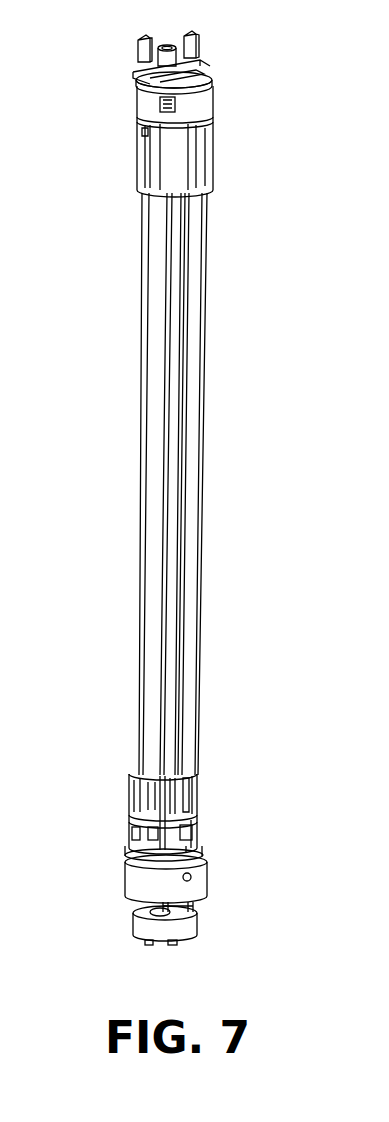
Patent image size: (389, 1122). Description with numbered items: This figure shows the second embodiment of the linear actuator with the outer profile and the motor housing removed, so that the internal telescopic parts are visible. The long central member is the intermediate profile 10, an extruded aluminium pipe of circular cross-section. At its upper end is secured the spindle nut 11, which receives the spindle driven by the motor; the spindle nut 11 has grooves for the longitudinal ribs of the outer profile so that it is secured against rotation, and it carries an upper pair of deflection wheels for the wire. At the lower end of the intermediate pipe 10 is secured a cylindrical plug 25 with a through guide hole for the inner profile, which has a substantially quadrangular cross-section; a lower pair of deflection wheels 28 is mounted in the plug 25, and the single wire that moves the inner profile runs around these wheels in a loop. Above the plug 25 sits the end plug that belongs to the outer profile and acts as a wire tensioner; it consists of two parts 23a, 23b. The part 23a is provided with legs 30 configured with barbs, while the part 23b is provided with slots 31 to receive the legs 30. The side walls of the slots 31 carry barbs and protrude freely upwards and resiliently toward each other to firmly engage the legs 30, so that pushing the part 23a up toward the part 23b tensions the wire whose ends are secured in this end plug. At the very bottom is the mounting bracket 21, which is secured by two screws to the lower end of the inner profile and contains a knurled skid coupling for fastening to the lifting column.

The intermediate profile 10 is at (152, 428).
The spindle nut 11 is at (199, 158).
The mounting bracket 21 is at (197, 930).
The end plug part with legs 23a is at (132, 828).
The end plug part with slots 23b is at (132, 790).
The cylindrical plug 25 is at (130, 880).
The deflection wheels 28 is at (195, 905).
The legs 30 is at (197, 815).
The slots 31 is at (197, 785).